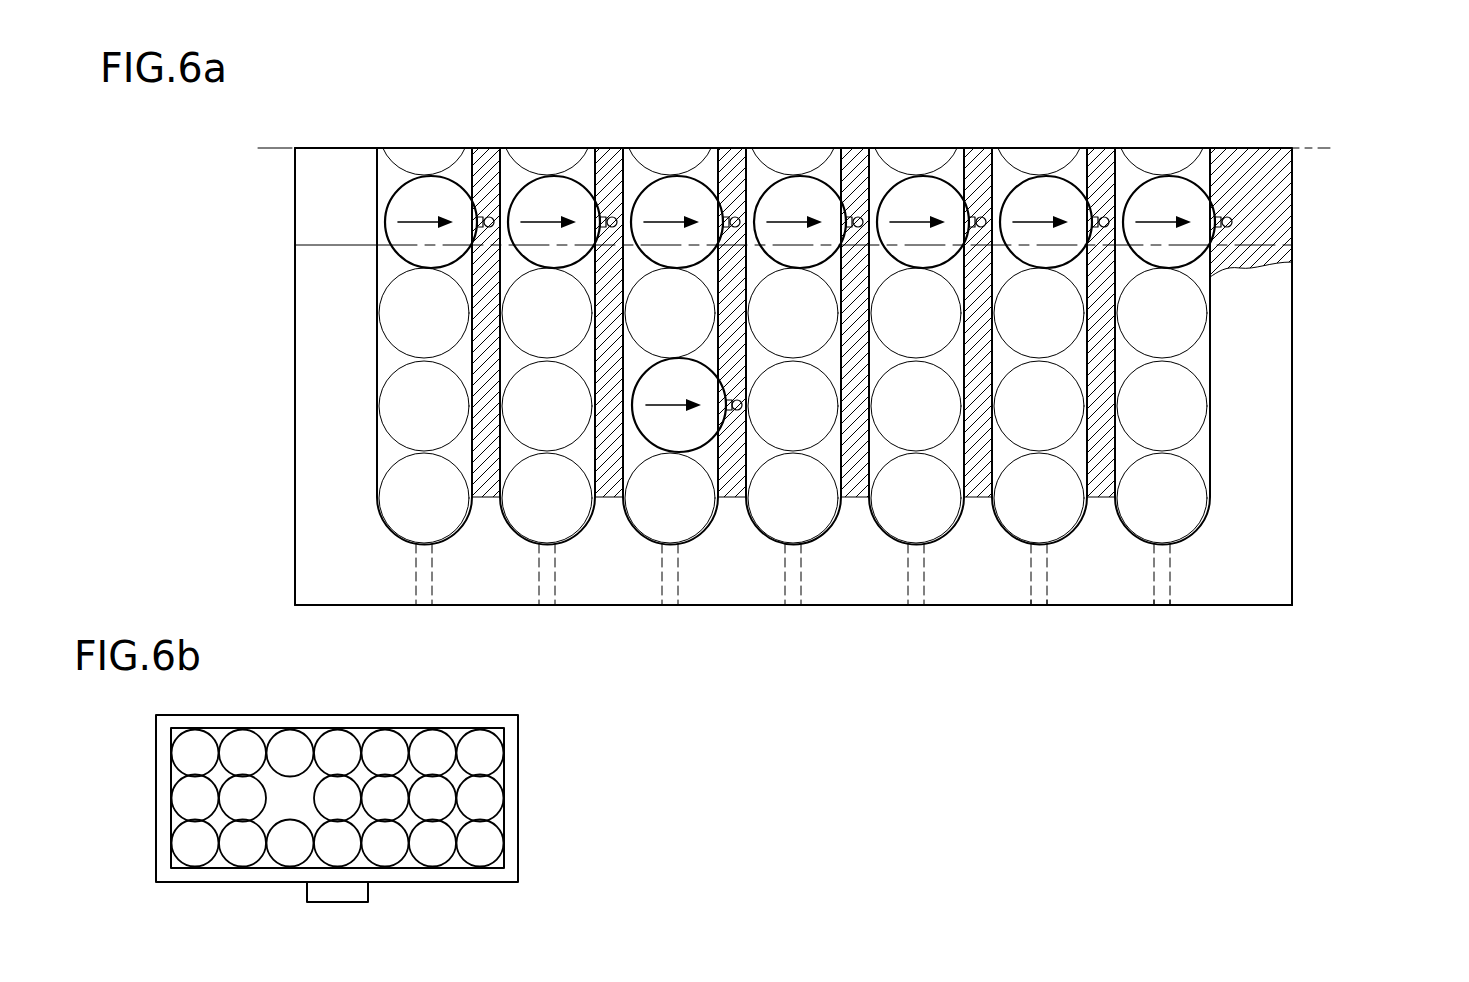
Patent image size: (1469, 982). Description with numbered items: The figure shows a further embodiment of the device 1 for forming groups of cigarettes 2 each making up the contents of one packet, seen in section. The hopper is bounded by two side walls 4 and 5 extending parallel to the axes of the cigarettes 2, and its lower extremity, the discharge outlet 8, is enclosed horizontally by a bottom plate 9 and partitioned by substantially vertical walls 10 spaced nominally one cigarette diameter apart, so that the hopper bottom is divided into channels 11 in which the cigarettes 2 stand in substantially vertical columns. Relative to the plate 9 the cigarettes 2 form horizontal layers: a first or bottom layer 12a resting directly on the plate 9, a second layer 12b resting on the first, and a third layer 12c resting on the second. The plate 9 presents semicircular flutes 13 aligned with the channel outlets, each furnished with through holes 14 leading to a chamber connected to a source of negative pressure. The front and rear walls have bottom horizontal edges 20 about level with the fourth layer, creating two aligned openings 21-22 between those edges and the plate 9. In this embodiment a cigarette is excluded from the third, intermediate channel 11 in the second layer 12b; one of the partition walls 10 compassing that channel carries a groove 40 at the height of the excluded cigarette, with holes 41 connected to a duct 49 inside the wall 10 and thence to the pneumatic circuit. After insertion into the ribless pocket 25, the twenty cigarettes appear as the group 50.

In FIG. 6a, the device 1 is at (1330, 285).
In FIG. 6a, the cigarettes 2 is at (552, 190).
In FIG. 6a, the side wall 4 is at (295, 210).
In FIG. 6a, the side wall 5 is at (1292, 388).
In FIG. 6a, the discharge outlet 8 is at (284, 270).
In FIG. 6a, the bottom plate 9 is at (605, 578).
In FIG. 6a, the vertical walls 10 is at (978, 160).
In FIG. 6a, the channels 11 is at (753, 186).
In FIG. 6a, the first or bottom layer 12a is at (377, 498).
In FIG. 6a, the second layer 12b is at (377, 408).
In FIG. 6a, the third layer 12c is at (377, 313).
In FIG. 6a, the flutes 13 is at (644, 532).
In FIG. 6a, the through holes 14 is at (1035, 592).
In FIG. 6a, the bottom horizontal edges 20 is at (363, 246).
In FIG. 6a, the openings 21-22 is at (1313, 433).
In FIG. 6b, the pocket 25 is at (518, 848).
In FIG. 6a, the groove 40 is at (727, 390).
In FIG. 6a, the holes 41 is at (728, 410).
In FIG. 6a, the duct 49 is at (1232, 223).
In FIG. 6b, the group 50 is at (502, 779).